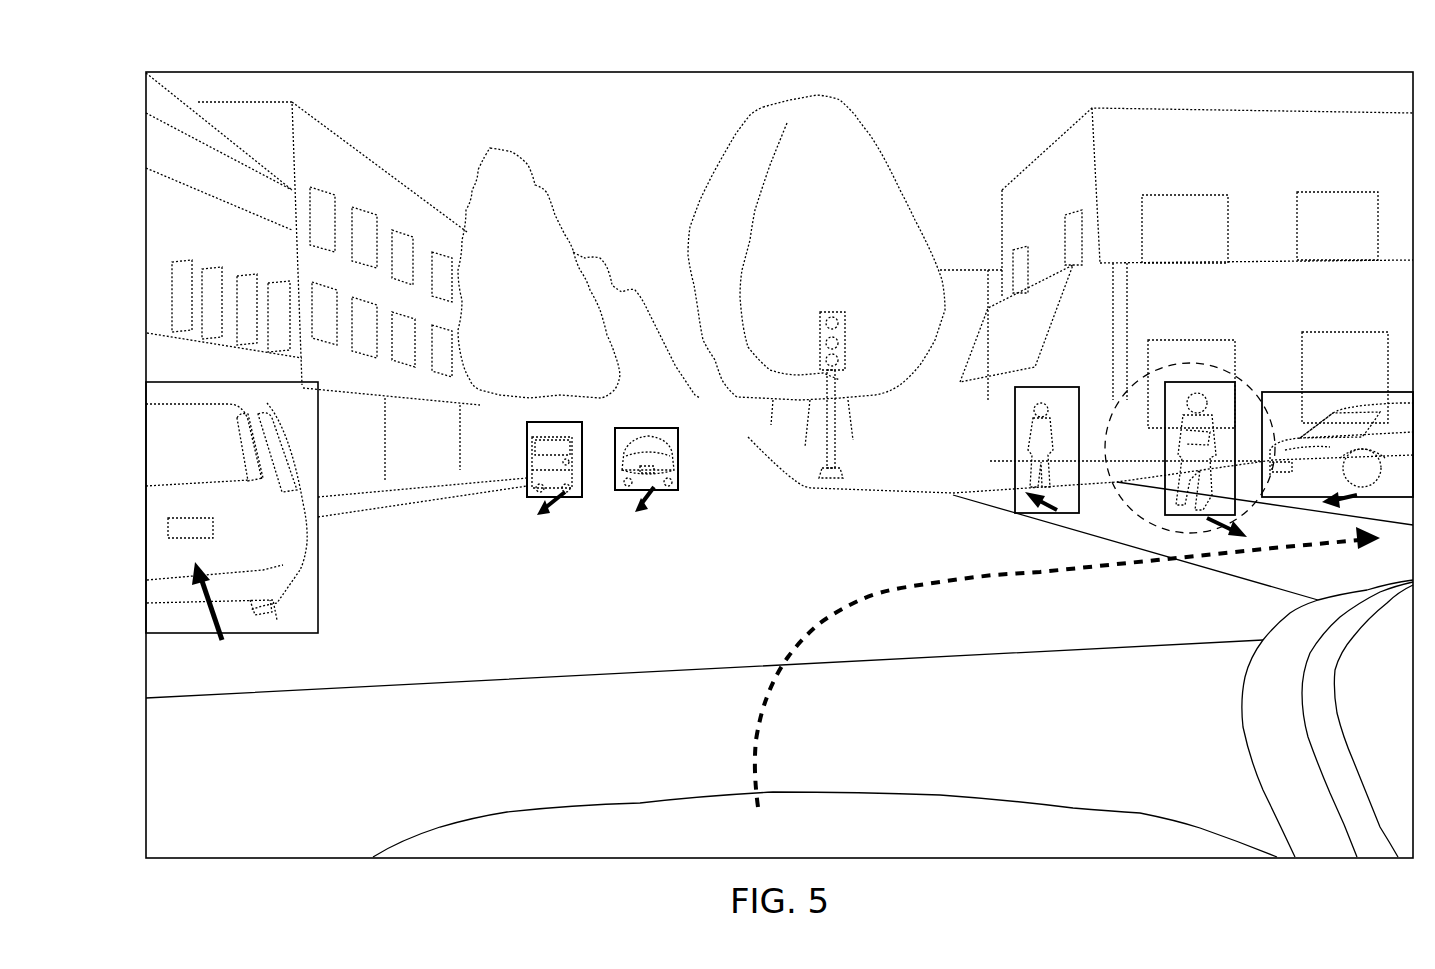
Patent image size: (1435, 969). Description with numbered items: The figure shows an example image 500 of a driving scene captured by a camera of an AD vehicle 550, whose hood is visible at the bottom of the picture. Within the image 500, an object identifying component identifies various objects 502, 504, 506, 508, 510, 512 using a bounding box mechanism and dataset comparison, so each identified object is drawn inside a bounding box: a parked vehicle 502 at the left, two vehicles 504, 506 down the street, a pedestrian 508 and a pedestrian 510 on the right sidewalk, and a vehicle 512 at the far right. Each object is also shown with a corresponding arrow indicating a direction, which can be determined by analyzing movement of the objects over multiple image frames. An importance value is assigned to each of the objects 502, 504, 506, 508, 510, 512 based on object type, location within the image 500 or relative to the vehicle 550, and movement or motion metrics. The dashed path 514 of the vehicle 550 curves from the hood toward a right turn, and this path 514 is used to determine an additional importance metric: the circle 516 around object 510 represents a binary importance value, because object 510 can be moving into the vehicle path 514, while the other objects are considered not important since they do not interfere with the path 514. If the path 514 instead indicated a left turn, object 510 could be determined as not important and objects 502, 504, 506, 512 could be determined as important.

The image 500 is at (244, 62).
The object 502 is at (176, 382).
The object 504 is at (545, 421).
The object 506 is at (652, 425).
The object 508 is at (1013, 426).
The object 510 is at (1198, 380).
The object 512 is at (1372, 400).
The path 514 is at (822, 621).
The circle 516 is at (1122, 380).
The AD vehicle 550 is at (580, 804).